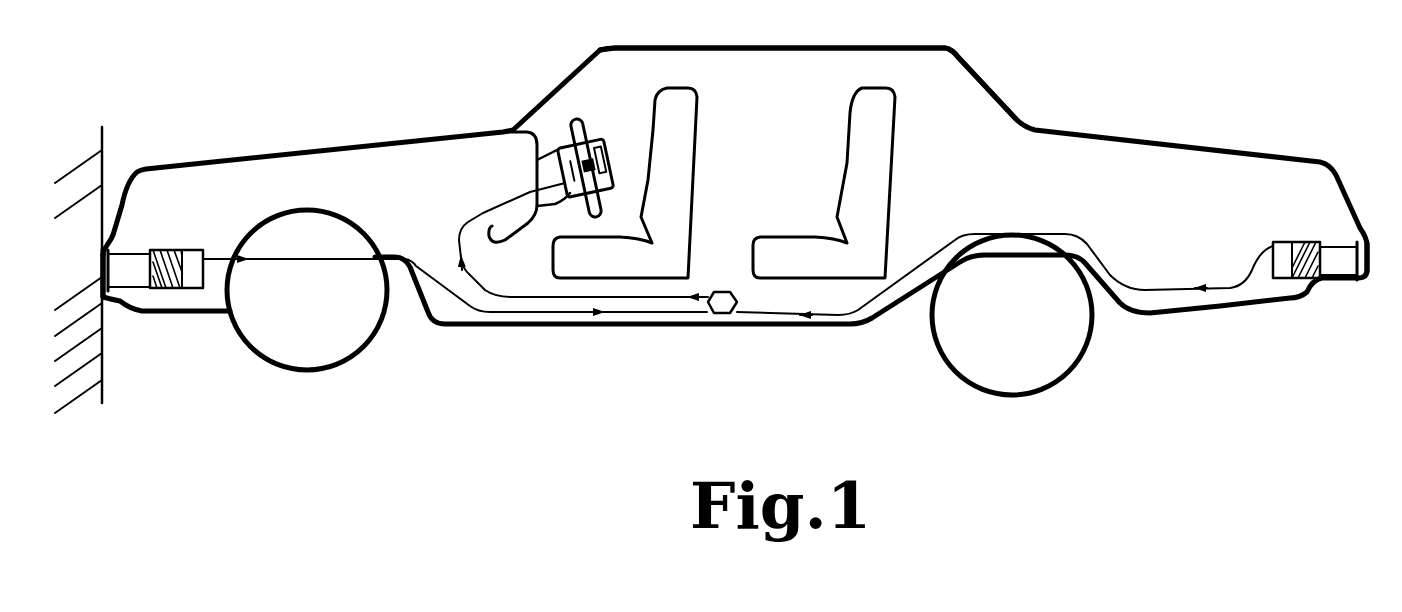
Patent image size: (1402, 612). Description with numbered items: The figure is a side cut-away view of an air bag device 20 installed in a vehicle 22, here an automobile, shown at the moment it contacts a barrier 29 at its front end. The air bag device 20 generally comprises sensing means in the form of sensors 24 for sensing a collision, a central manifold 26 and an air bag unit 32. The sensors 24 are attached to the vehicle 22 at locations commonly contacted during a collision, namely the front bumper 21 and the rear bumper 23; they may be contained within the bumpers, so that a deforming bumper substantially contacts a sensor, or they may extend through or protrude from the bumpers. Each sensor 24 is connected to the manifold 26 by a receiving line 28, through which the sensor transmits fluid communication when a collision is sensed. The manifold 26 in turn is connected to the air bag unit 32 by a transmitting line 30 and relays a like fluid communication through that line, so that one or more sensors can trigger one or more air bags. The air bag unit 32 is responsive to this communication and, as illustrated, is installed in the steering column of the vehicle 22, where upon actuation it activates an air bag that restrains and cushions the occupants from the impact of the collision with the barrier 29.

The air bag device 20 is at (318, 124).
The front bumper 21 is at (102, 253).
The vehicle 22 is at (990, 82).
The rear bumper 23 is at (1363, 240).
The sensor 24 is at (183, 250).
The central manifold 26 is at (723, 313).
The receiving line 28 is at (500, 313).
The barrier 29 is at (103, 152).
The transmitting line 30 is at (497, 290).
The air bag unit 32 is at (562, 140).